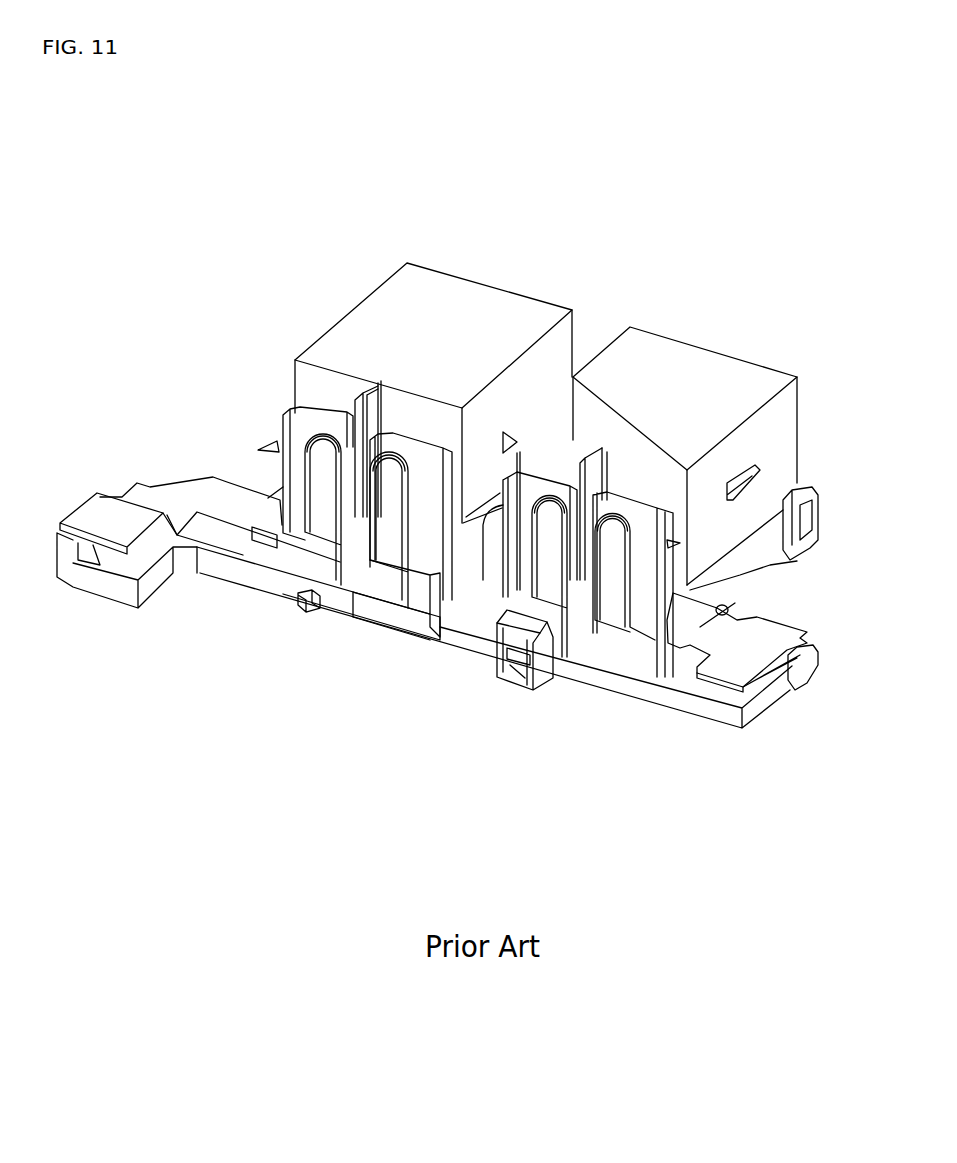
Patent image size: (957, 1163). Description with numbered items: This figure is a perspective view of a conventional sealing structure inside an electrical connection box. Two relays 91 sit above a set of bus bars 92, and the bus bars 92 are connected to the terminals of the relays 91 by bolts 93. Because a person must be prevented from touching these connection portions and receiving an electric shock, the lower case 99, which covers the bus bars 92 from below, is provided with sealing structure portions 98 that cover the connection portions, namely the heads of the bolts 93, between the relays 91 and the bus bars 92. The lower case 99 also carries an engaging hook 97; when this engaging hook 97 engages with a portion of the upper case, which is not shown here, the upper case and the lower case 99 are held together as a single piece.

The relay 91 is at (500, 305).
The bus bar 92 is at (226, 490).
The bolt 93 is at (281, 440).
The engaging hook 97 is at (512, 668).
The sealing structure portion 98 is at (275, 450).
The lower case 99 is at (750, 727).